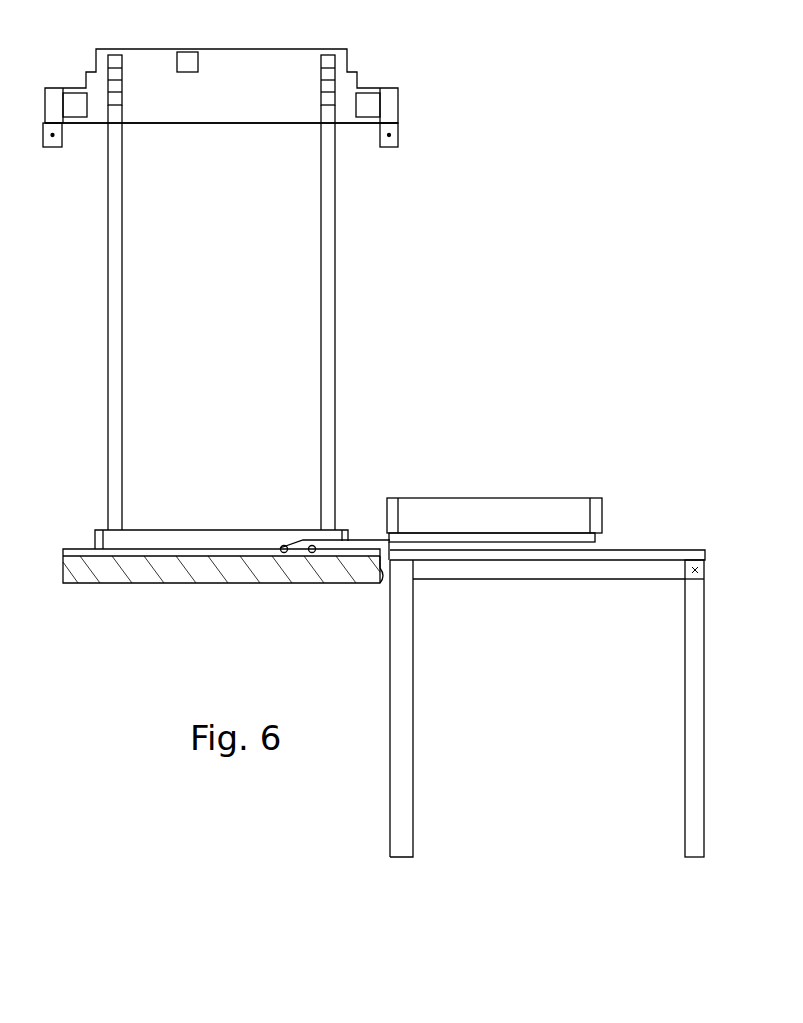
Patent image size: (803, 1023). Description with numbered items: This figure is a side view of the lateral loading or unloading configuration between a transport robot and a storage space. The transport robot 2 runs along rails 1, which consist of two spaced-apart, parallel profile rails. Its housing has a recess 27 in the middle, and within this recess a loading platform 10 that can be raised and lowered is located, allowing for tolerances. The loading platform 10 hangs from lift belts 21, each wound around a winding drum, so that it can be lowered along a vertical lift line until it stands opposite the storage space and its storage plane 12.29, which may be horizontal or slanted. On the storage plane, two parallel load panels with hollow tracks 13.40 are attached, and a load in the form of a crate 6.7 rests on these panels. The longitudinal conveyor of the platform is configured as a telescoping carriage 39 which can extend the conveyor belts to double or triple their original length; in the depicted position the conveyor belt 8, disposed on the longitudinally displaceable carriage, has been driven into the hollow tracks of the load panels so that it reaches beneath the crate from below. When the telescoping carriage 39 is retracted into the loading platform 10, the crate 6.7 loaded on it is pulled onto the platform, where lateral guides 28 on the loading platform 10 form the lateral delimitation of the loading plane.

The rails 1 is at (57, 148).
The transport robot 2 is at (262, 153).
The lift belt 21 is at (116, 350).
The recess 27 is at (225, 123).
The lateral guides 28 is at (230, 540).
The conveyor belt 8 is at (343, 580).
The loading platform 10 is at (247, 583).
The telescoping carriage 39 is at (376, 583).
The load / crate 6.7 is at (514, 508).
The load panels / hollow tracks 13.40 is at (516, 553).
The storage space / storage plane 12.29 is at (658, 551).